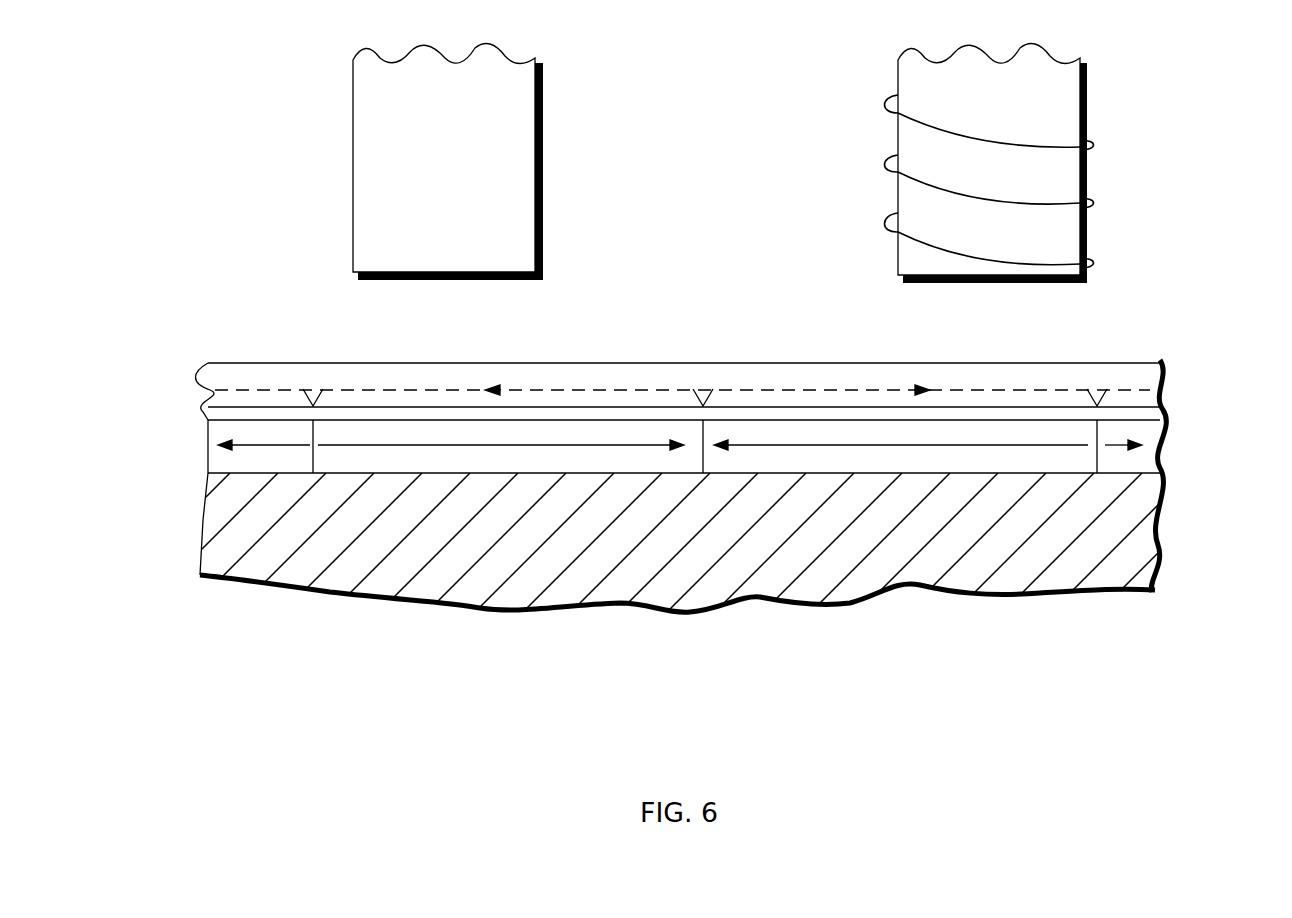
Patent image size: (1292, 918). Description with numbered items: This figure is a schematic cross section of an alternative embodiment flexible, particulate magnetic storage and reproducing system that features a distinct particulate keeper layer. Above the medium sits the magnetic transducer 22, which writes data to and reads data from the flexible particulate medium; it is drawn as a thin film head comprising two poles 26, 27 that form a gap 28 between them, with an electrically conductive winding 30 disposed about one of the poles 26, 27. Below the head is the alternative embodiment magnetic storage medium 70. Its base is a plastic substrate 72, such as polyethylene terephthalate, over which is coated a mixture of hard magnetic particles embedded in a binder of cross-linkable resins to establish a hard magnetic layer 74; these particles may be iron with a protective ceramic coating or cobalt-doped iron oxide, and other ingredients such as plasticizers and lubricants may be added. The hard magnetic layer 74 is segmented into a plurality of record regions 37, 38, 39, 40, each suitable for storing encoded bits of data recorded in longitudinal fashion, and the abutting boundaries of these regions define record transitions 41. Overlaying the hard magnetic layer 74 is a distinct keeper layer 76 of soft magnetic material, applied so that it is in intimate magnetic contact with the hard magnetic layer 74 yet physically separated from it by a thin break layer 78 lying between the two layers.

The magnetic transducer 22 is at (1044, 184).
The pole 26 is at (366, 280).
The pole 27 is at (1060, 284).
The gap 28 is at (728, 175).
The electrically conductive winding 30 is at (1094, 203).
The record region 37 is at (222, 458).
The record region 38 is at (355, 463).
The record region 39 is at (855, 462).
The record region 40 is at (1115, 467).
The record transition 41 is at (216, 431).
The magnetic storage medium 70 is at (688, 483).
The plastic substrate 72 is at (390, 582).
The hard magnetic layer 74 is at (672, 538).
The keeper layer 76 is at (397, 391).
The break layer 78 is at (752, 415).